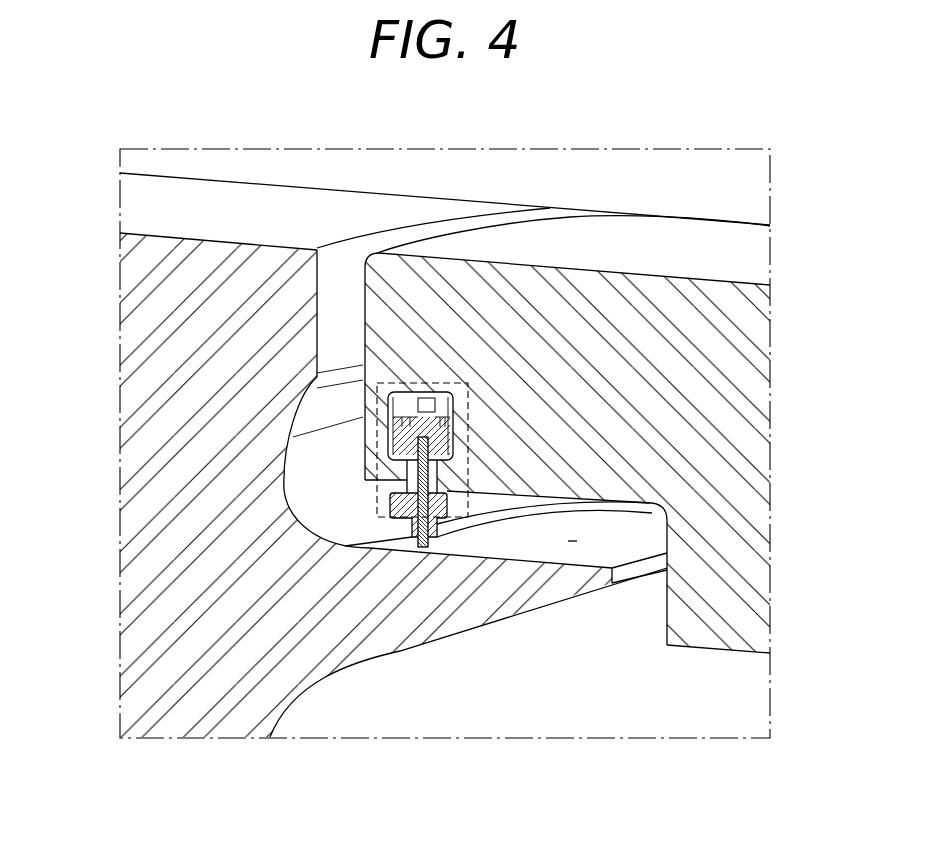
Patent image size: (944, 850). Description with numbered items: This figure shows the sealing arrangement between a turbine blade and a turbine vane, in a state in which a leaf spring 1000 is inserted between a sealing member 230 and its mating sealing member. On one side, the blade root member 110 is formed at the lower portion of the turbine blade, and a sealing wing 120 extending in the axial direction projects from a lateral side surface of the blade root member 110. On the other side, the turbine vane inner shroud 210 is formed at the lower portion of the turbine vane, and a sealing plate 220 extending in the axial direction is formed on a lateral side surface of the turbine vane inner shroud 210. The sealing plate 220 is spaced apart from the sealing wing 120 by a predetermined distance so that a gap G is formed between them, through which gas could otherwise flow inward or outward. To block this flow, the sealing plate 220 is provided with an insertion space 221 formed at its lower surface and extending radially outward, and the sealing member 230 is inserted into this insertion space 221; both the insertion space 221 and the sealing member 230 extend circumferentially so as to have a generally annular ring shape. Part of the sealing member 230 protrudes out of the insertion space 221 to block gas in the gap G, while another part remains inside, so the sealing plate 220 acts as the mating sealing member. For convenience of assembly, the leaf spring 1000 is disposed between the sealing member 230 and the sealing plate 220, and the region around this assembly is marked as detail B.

The blade root member 110 is at (165, 427).
The sealing wing 120 is at (436, 598).
The turbine vane inner shroud 210 is at (730, 480).
The sealing plate 220 is at (593, 318).
The insertion space 221 is at (403, 390).
The sealing member 230 is at (392, 506).
The leaf spring 1000 is at (444, 393).
The detail region B is at (472, 414).
The gap G is at (572, 542).